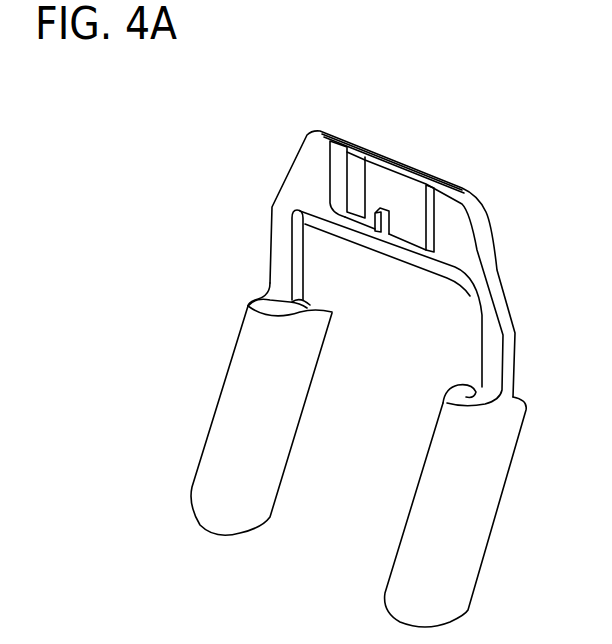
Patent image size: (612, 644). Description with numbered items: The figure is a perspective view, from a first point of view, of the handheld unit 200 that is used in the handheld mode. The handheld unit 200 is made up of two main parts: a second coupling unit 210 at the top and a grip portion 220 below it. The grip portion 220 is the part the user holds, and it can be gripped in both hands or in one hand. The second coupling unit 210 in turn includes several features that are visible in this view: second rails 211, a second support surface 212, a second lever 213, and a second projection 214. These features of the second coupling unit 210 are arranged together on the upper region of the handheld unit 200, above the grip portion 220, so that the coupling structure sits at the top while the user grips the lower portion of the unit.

The handheld unit 200 is at (268, 121).
The second coupling unit 210 is at (427, 213).
The second rails 211 is at (412, 214).
The second support surface 212 is at (392, 219).
The second lever 213 is at (383, 153).
The second projection 214 is at (378, 180).
The grip portion 220 is at (448, 470).